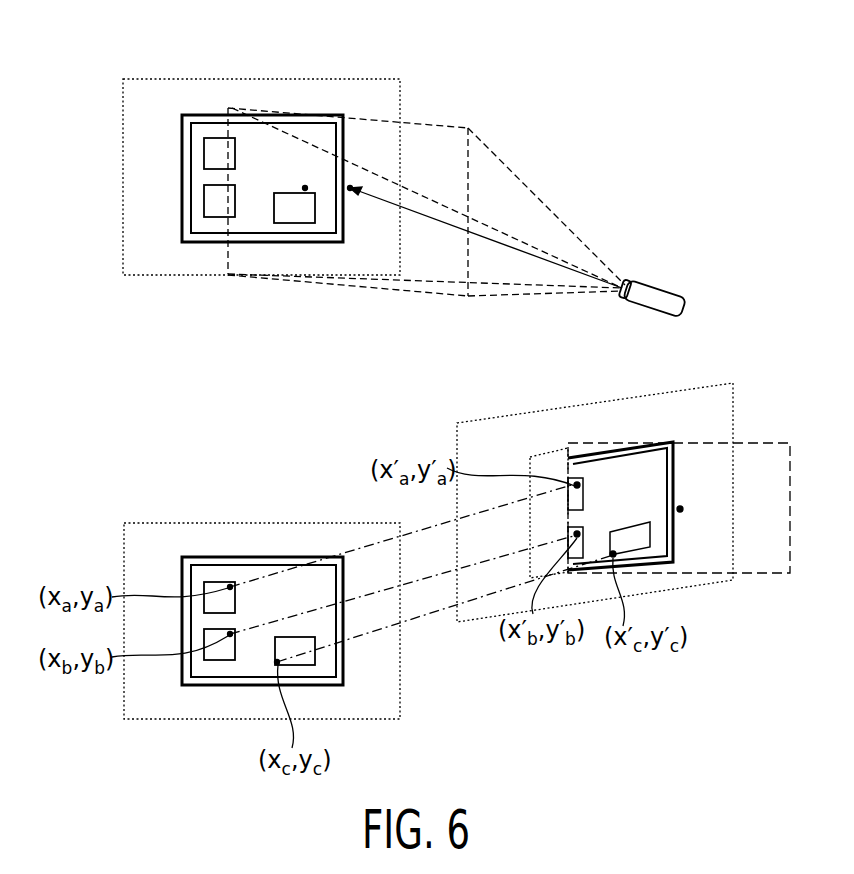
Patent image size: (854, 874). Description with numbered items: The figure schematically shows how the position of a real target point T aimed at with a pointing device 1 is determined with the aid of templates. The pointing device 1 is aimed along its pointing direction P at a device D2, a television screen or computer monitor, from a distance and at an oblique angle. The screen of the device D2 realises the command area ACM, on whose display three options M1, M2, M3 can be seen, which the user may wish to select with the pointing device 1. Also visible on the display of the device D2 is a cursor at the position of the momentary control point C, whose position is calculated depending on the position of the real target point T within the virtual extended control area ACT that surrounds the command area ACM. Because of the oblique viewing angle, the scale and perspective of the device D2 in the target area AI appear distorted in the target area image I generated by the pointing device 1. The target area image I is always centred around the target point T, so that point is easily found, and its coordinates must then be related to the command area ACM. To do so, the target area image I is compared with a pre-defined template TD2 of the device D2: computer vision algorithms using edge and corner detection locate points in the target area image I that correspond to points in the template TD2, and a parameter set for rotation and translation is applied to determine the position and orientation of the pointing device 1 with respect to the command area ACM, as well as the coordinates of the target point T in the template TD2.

The pointing device 1 is at (690, 297).
The virtual extended control area ACT is at (370, 88).
The command area ACM is at (244, 135).
The target area AI is at (468, 128).
The device D2 is at (243, 242).
The option M1 is at (218, 158).
The option M2 is at (218, 201).
The option M3 is at (290, 218).
The control point C is at (305, 185).
The target point T is at (352, 192).
The pointing direction P is at (508, 246).
The template TD2 is at (243, 560).
The target area image I is at (600, 442).